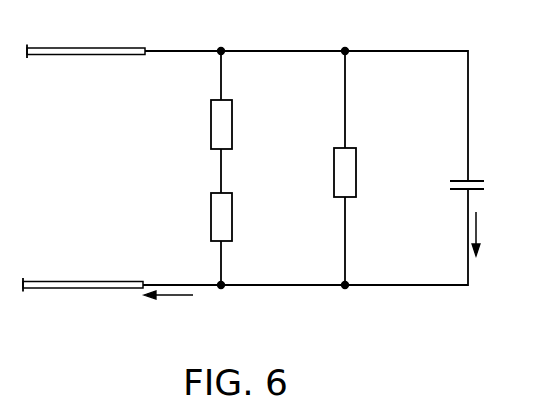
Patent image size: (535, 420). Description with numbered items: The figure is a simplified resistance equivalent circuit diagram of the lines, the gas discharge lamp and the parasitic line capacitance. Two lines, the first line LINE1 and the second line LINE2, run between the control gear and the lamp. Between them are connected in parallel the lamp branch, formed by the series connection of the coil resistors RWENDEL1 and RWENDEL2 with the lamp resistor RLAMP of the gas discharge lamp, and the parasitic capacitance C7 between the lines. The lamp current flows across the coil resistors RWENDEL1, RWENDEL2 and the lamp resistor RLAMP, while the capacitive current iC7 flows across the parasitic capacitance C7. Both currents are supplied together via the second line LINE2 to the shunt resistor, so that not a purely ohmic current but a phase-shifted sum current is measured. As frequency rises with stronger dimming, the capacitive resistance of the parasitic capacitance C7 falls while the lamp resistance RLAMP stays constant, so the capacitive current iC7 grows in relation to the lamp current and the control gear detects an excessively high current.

The line 1 LINE1 is at (103, 48).
The line 2 LINE2 is at (95, 288).
The coil resistor R Wendel 1 RWENDEL1 is at (211, 128).
The coil resistor R Wendel 2 RWENDEL2 is at (211, 227).
The lamp resistor R Lampe RLAMP is at (356, 168).
The parasitic capacitance C7 is at (478, 180).
The capacitive current iC7 is at (493, 234).